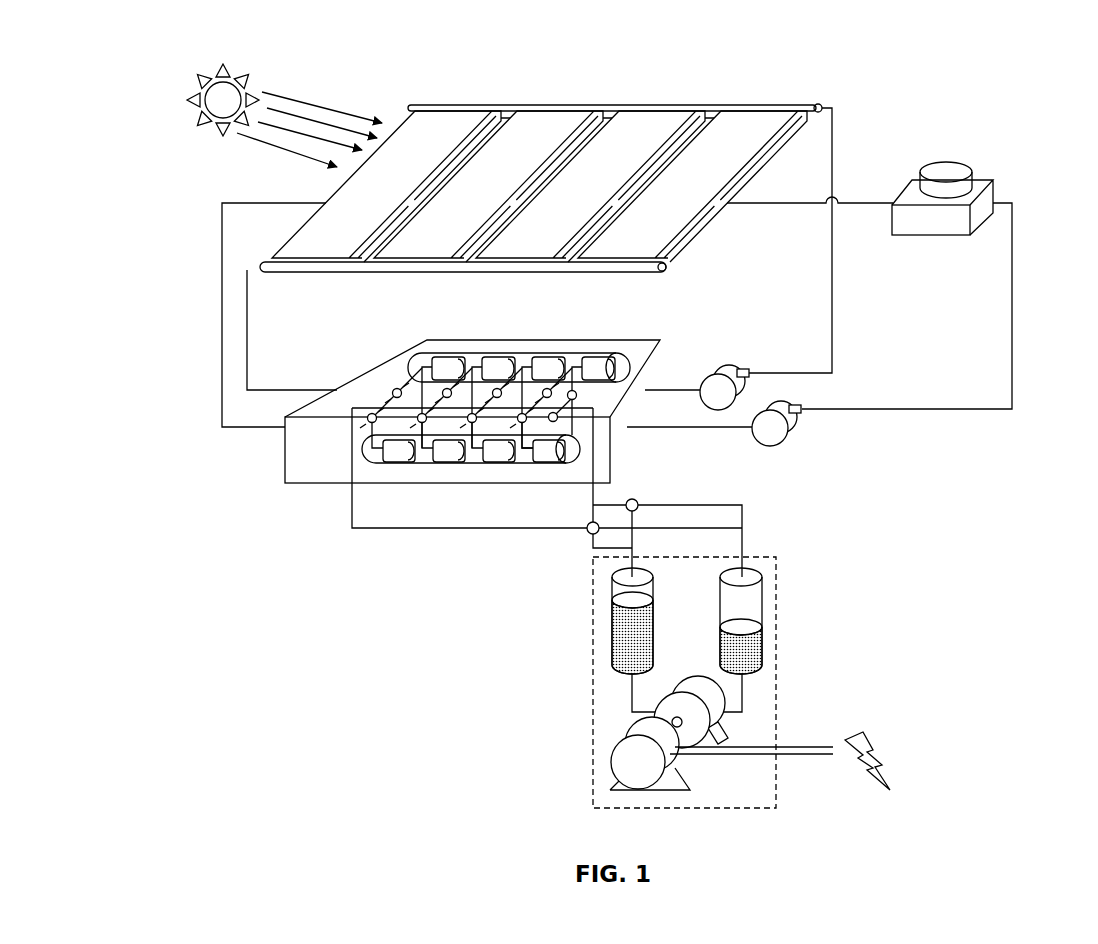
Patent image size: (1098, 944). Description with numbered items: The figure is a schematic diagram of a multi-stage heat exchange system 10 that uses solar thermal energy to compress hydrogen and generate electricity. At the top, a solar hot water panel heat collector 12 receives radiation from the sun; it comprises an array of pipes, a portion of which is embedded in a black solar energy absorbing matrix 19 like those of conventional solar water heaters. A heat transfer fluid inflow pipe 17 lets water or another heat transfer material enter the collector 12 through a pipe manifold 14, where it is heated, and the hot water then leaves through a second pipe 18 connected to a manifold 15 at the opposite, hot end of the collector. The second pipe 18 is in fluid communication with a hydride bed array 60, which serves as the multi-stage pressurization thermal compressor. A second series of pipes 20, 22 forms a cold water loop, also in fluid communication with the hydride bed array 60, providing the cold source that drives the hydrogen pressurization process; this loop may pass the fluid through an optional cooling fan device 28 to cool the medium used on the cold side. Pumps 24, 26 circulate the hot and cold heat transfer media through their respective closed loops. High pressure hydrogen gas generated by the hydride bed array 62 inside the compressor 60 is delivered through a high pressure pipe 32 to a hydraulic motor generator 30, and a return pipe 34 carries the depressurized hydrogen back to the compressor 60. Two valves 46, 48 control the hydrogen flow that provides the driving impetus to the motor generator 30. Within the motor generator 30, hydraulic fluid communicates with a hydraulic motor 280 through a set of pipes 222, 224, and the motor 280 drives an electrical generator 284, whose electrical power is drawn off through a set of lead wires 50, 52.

The multi-stage heat exchange system 10 is at (892, 450).
The solar hot water panel heat collector 12 is at (539, 163).
The pipe manifold 14 is at (668, 106).
The manifold 15 is at (268, 261).
The heat transfer fluid inflow pipe 17 is at (835, 333).
The second pipe 18 is at (247, 320).
The solar energy absorbing matrix 19 is at (548, 125).
The cold water pipe 20 is at (1013, 328).
The cold water pipe 22 is at (222, 262).
The pump 24 is at (704, 400).
The pump 26 is at (753, 437).
The cooling fan device 28 is at (952, 166).
The hydraulic motor generator 30 is at (682, 682).
The high pressure pipe 32 is at (700, 506).
The return pipe 34 is at (445, 530).
The valve 46 is at (637, 501).
The valve 48 is at (589, 523).
The lead wire 50 is at (800, 758).
The lead wire 52 is at (805, 746).
The hydride bed array 60 is at (447, 416).
The hydride bed array 62 is at (428, 352).
The hydraulic fluid pipe 222 is at (745, 690).
The hydraulic fluid pipe 224 is at (628, 704).
The hydraulic motor 280 is at (705, 683).
The electrical generator 284 is at (630, 765).